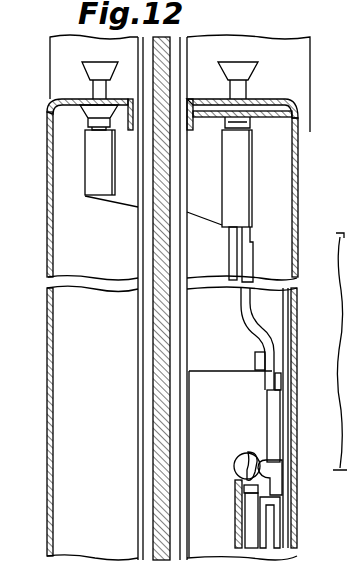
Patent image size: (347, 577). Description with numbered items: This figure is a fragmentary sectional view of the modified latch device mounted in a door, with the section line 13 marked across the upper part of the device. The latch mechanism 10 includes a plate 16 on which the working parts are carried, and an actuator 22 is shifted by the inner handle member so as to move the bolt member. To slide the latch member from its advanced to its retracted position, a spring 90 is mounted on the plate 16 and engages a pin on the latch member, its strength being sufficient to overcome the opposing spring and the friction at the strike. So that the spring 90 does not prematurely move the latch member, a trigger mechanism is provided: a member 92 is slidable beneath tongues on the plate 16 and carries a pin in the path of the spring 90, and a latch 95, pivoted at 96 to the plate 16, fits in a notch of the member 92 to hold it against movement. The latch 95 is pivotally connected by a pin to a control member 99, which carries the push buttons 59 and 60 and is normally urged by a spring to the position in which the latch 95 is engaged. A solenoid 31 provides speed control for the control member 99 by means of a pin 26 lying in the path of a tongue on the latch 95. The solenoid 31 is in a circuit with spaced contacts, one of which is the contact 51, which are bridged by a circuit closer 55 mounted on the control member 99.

The section line 13- 13 is at (138, 129).
The push button 60 is at (90, 70).
The push button 59 is at (248, 72).
The control member 99 is at (248, 263).
The contact 51 is at (277, 378).
The circuit closer 55 is at (255, 361).
The spring 90 is at (267, 420).
The plate 16 is at (285, 414).
The latch mechanism 10 is at (289, 446).
The solenoid 31 is at (237, 466).
The pin 26 is at (250, 457).
The pivot 96 is at (260, 471).
The latch 95 is at (243, 504).
The actuator 22 is at (237, 527).
The trigger member 92 is at (272, 527).